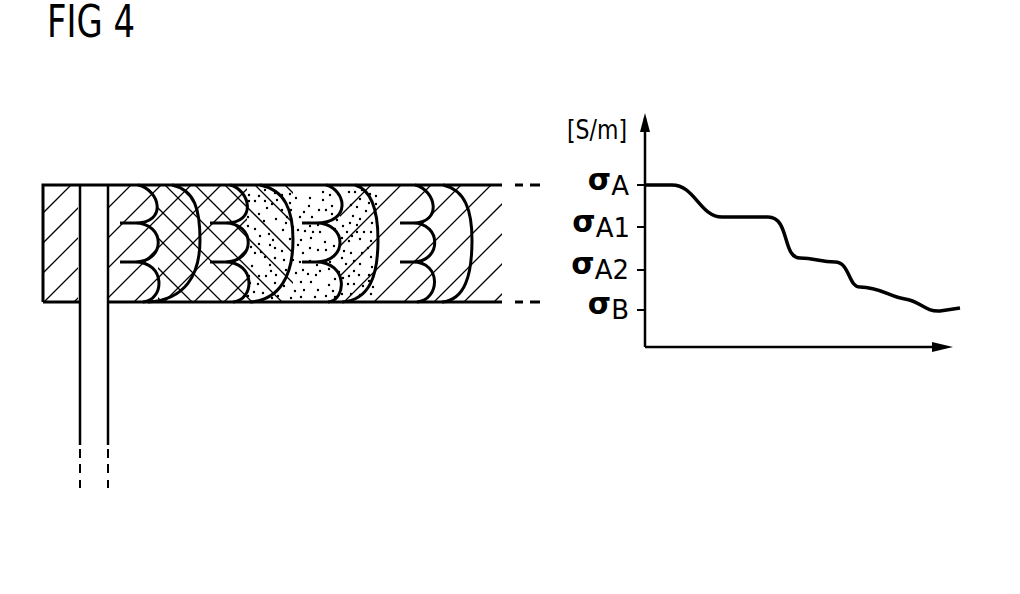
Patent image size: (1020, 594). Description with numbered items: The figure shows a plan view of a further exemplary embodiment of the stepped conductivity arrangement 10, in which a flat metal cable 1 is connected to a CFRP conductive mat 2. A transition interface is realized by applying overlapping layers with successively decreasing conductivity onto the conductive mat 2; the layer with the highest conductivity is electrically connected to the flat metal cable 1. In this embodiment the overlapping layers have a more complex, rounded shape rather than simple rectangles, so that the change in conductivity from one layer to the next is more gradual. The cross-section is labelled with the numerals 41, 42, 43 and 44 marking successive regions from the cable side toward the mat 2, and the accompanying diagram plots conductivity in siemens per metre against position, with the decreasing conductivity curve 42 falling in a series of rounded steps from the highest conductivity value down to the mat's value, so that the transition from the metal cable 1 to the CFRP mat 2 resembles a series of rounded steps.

The stepped conductivity arrangement 10 is at (152, 154).
The flat metal cable 1 is at (98, 403).
The CFRP conductive mat 2 is at (477, 198).
The first region (substrate material) 41 is at (62, 292).
The decreasing conductivity curve 42 is at (212, 290).
The second deposited layer 43 is at (308, 290).
The third deposited layer 44 is at (395, 290).